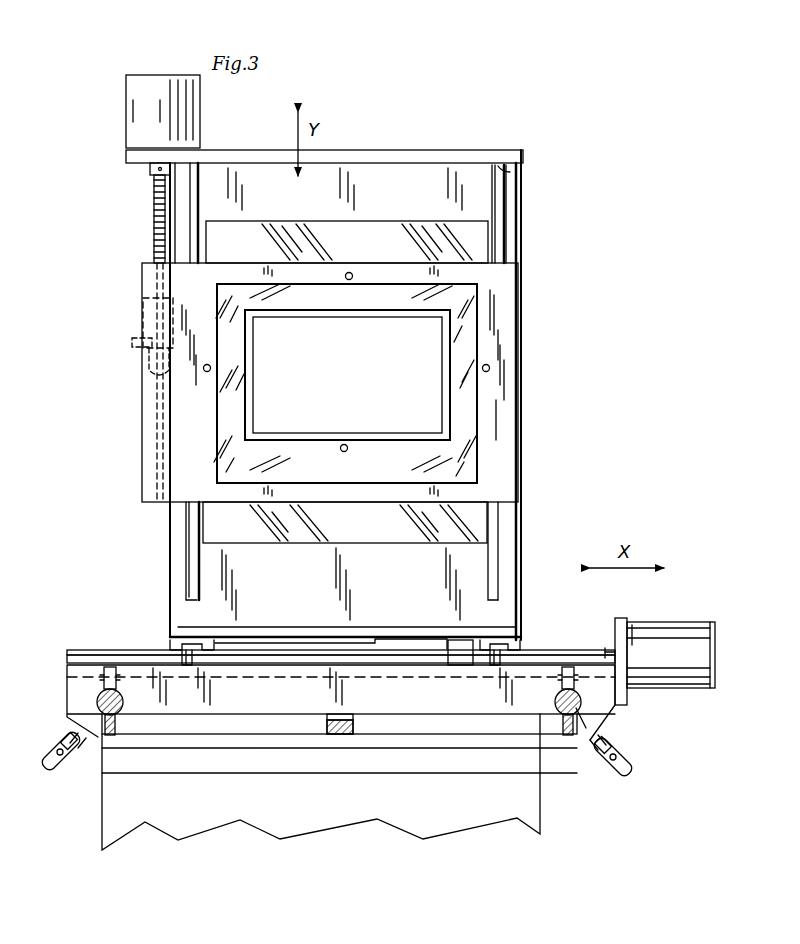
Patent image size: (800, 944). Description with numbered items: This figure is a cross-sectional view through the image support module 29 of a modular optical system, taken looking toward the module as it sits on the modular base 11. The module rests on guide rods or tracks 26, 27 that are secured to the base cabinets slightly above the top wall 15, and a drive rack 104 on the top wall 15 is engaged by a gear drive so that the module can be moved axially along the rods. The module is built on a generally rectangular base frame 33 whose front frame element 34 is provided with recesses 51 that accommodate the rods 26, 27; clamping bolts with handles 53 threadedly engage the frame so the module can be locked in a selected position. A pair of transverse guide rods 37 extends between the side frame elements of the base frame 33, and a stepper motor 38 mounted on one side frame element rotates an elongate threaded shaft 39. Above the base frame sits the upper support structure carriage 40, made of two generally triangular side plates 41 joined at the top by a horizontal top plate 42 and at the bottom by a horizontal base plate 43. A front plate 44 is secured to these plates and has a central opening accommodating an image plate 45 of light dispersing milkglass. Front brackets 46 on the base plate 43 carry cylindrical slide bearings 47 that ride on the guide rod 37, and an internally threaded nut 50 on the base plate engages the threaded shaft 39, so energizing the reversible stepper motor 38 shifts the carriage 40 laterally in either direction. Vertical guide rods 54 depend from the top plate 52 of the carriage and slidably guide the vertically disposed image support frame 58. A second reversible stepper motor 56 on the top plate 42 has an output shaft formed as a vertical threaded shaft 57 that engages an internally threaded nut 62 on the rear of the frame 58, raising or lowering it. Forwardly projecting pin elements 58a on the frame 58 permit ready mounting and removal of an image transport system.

The modular base 11 is at (100, 813).
The top wall 15 is at (466, 726).
The guide rods or tracks 26 is at (582, 703).
The rods or tracks 27 is at (98, 698).
The image support module 29 is at (564, 348).
The base frame 33 is at (65, 682).
The front frame element 34 is at (360, 527).
The guide rods 37 is at (95, 650).
The stepper motor 38 is at (658, 628).
The threaded shaft 39 is at (305, 663).
The upper support structure carriage 40 is at (527, 212).
The side plates 41 is at (170, 552).
The top plate 42 is at (334, 150).
The base plate 43 is at (272, 652).
The front plate 44 is at (408, 593).
The image plate 45 is at (480, 244).
The front brackets 46 is at (182, 647).
The cylindrical slide bearings 47 is at (200, 655).
The internally threaded nut 50 is at (455, 640).
The recesses 51 is at (120, 698).
The top plate 52 is at (513, 170).
The handle 53 is at (55, 770).
The vertical guide rods 54 is at (188, 522).
The stepper motor 56 is at (200, 113).
The threaded shaft 57 is at (154, 214).
The image support frame 58 is at (508, 282).
The pin elements 58a is at (352, 273).
The internally threaded nut 62 is at (146, 358).
The drive rack 104 is at (338, 736).